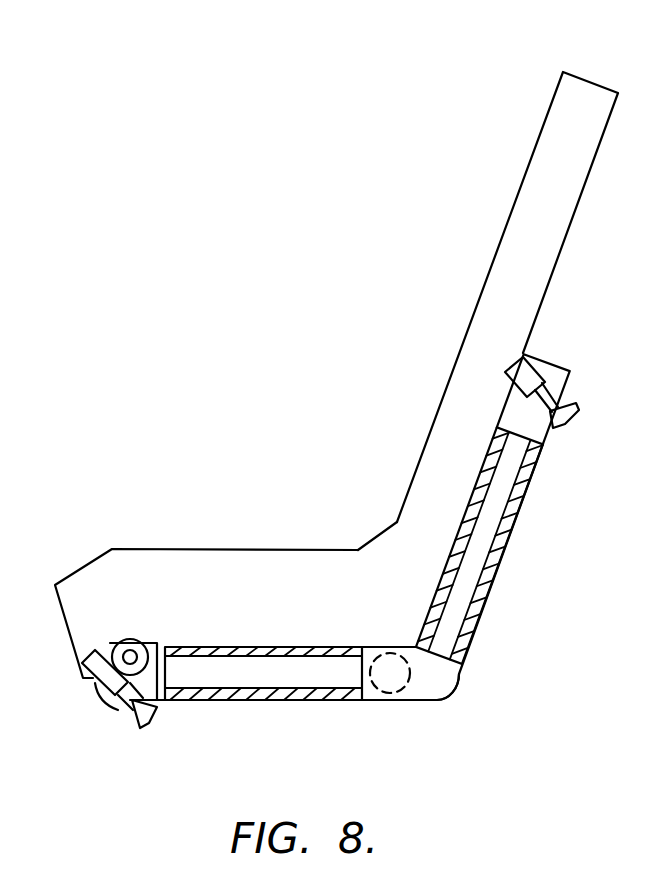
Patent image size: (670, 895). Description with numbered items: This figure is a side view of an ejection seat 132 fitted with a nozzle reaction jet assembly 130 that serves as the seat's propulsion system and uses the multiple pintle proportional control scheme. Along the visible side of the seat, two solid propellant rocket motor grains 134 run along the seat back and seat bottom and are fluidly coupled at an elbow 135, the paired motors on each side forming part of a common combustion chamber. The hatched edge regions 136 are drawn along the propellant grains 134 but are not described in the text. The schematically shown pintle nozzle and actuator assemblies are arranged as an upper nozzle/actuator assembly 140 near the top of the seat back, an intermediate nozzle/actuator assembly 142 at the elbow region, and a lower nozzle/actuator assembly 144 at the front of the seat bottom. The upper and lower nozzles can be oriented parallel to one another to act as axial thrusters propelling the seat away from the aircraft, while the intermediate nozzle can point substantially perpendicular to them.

The reaction jet assembly 130 is at (433, 728).
The ejection seat 132 is at (506, 78).
The propellant grains 134 is at (530, 486).
The elbow 135 is at (459, 682).
The hatched edge strip 136 is at (458, 570).
The upper nozzle/actuator assemblies 140 is at (577, 407).
The intermediate nozzle/actuator assemblies 142 is at (410, 677).
The lower nozzle/actuator assemblies 144 is at (112, 714).